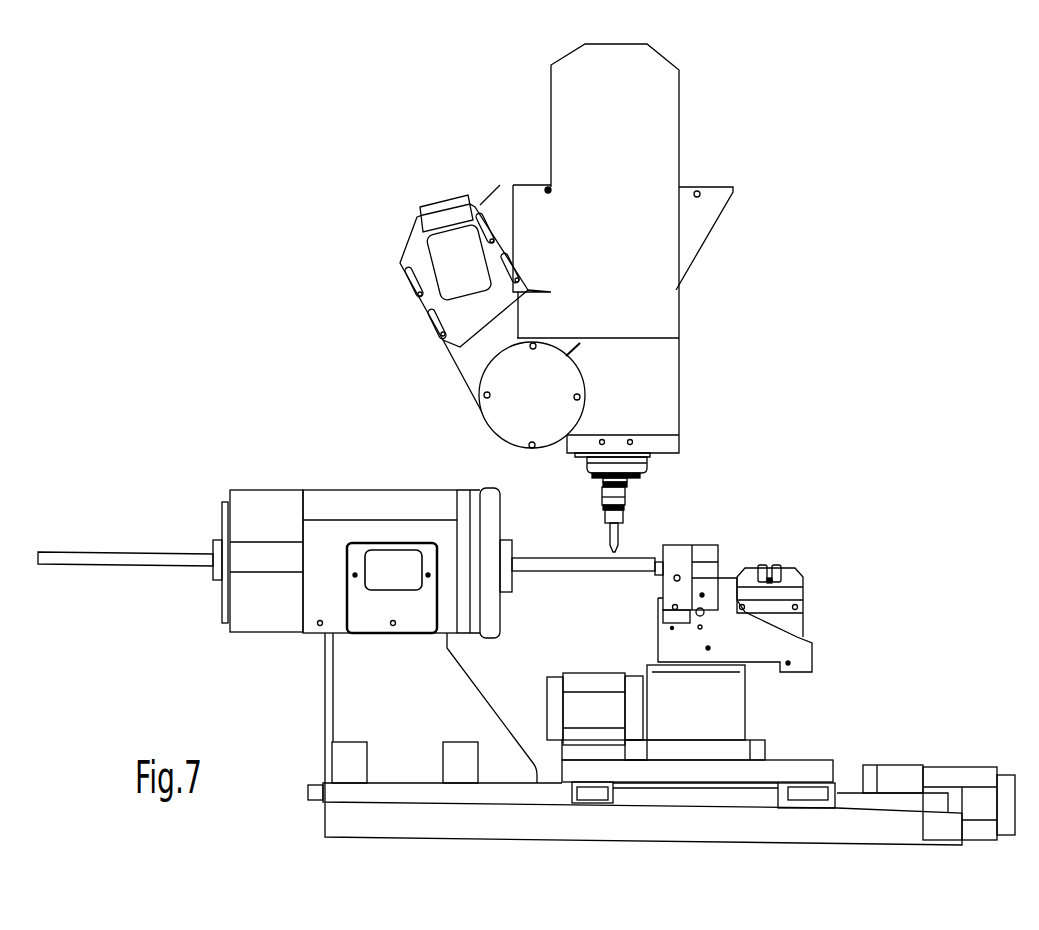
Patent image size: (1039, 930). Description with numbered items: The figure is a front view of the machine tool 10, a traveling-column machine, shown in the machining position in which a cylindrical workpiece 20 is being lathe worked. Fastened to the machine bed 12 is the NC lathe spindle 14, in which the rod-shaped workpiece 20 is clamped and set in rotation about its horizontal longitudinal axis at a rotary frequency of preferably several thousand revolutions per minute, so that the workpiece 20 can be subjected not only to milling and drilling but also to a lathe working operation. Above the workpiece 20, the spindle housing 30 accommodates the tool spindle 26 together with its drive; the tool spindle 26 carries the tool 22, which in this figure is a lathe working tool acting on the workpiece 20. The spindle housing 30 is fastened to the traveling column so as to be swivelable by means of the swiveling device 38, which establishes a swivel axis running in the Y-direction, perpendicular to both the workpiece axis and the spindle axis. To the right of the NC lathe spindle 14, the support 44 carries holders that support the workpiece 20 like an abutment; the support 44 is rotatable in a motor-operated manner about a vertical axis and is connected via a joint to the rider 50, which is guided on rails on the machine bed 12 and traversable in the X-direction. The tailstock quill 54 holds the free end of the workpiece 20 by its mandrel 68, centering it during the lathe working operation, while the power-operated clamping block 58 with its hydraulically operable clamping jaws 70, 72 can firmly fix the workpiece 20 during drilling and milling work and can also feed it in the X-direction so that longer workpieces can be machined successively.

The machine tool 10 is at (274, 318).
The machine bed 12 is at (892, 823).
The NC lathe spindle 14 is at (273, 512).
The workpiece 20 is at (557, 565).
The tool 22 is at (618, 544).
The tool spindle 26 is at (627, 488).
The spindle housing 30 is at (647, 167).
The swiveling device 38 is at (523, 408).
The support 44 is at (792, 648).
The rider 50 is at (760, 753).
The tailstock quill 54 is at (678, 552).
The power-operated clamping block 58 is at (774, 528).
The mandrel 68 is at (658, 575).
The clamping jaw 70 is at (777, 563).
The clamping jaw 72 is at (763, 563).